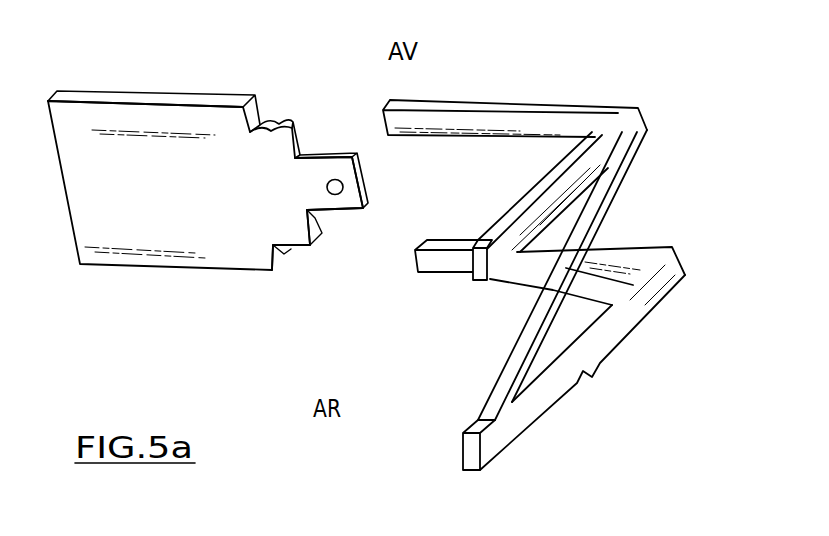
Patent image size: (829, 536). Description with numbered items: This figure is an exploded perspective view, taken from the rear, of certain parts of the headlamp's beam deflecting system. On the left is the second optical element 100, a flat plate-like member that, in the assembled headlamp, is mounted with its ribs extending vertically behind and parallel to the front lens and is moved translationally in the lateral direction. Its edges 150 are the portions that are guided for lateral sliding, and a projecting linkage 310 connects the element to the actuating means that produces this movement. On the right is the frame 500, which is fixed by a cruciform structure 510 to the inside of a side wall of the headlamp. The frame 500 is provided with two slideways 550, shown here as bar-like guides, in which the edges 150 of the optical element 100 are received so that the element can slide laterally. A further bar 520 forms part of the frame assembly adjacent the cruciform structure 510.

The second optical element 100 is at (208, 178).
The edges 150 is at (153, 97).
The linkage 310 is at (313, 178).
The frame 500 is at (550, 268).
The cruciform structure 510 is at (588, 355).
The attachment bar 520 is at (452, 266).
The slideways 550 is at (483, 120).